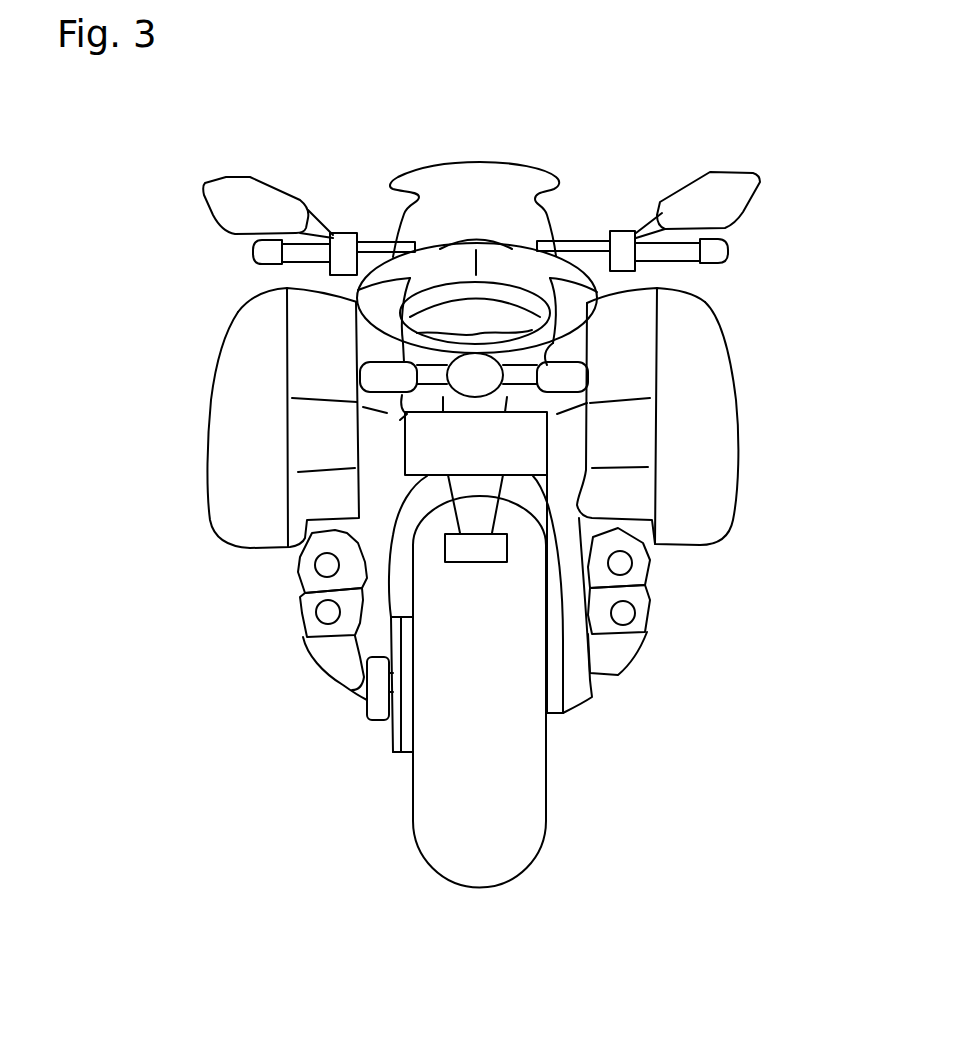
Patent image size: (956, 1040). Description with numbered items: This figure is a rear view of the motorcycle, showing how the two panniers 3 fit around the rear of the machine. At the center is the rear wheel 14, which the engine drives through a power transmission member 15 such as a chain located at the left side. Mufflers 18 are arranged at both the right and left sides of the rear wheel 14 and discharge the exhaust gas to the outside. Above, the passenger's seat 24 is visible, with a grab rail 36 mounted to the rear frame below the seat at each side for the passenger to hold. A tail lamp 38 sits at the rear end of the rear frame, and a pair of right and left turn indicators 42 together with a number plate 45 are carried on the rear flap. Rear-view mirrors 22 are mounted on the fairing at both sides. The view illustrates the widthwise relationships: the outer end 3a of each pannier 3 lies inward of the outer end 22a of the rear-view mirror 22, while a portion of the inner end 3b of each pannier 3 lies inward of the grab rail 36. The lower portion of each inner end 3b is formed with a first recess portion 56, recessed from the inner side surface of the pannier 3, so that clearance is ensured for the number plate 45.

The pannier 3 is at (476, 433).
The outer end 3a is at (211, 391).
The inner end 3b is at (402, 413).
The rear wheel 14 is at (525, 802).
The power transmission member 15 is at (403, 732).
The muffler 18 is at (323, 647).
The rear-view mirror 22 is at (470, 177).
The outer end 22a is at (203, 183).
The passenger's seat 24 is at (491, 281).
The grab rail 36 is at (381, 303).
The tail lamp 38 is at (499, 317).
The turn indicator 42 is at (382, 372).
The number plate 45 is at (523, 455).
The first recess portion 56 is at (373, 467).